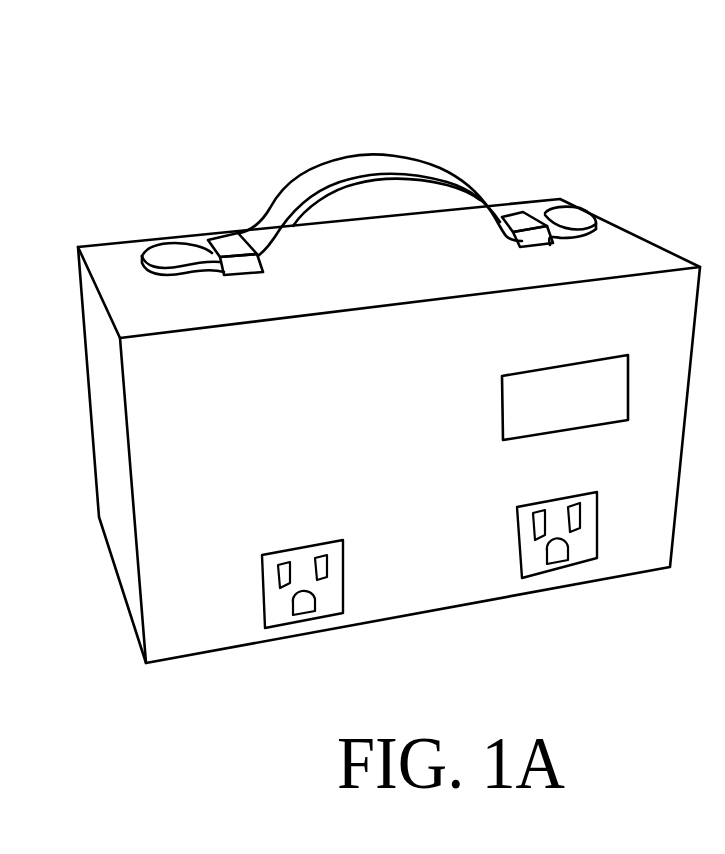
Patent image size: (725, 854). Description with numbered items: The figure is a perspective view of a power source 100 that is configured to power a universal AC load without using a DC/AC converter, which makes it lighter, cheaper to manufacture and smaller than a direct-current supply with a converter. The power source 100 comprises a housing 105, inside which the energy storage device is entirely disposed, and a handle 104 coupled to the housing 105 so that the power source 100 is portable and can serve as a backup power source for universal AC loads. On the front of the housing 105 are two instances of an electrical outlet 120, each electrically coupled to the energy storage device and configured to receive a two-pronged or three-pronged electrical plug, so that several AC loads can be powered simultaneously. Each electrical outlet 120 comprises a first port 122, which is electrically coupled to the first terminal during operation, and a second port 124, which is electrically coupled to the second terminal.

The power source 100 is at (257, 121).
The handle 104 is at (382, 172).
The housing 105 is at (305, 441).
The electrical outlet 120 is at (297, 530).
The first port 122 is at (323, 568).
The second port 124 is at (282, 582).